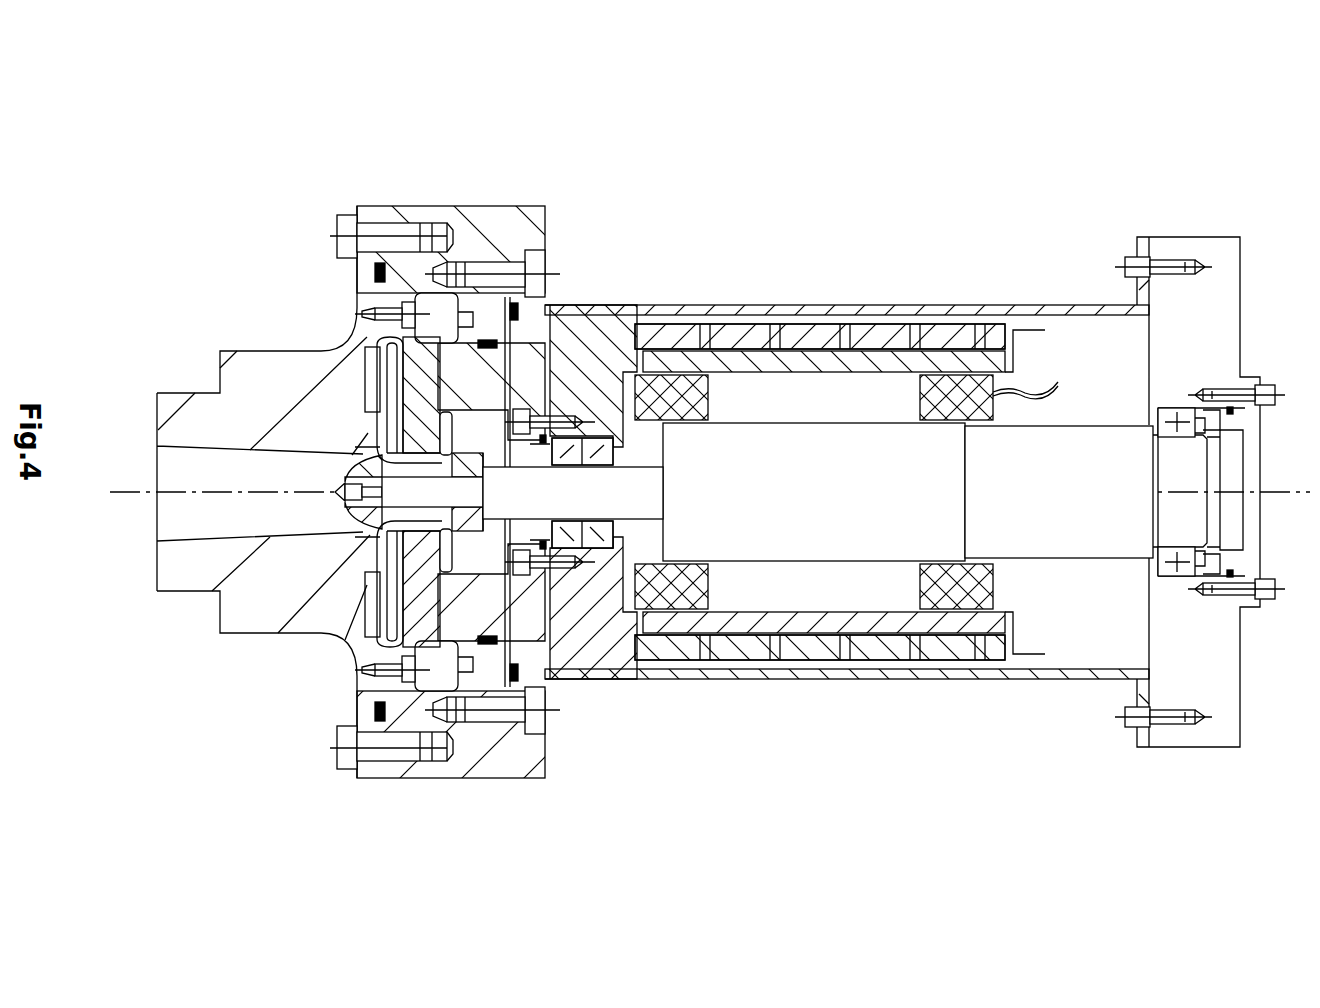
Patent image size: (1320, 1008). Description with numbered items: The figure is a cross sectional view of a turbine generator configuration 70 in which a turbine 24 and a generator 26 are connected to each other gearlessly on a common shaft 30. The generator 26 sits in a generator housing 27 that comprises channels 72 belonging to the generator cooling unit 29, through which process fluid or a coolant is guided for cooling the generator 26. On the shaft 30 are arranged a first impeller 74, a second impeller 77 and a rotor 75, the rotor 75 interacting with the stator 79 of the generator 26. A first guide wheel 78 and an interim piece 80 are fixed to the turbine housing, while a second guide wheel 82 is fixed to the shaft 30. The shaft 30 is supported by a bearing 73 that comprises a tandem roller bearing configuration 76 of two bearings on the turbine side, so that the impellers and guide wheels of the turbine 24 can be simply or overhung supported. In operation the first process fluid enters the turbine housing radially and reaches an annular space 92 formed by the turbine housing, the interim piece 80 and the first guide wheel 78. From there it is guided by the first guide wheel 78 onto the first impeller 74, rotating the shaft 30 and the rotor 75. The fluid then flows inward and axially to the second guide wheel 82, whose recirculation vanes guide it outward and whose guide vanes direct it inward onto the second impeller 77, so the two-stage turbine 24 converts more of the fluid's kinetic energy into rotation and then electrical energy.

The turbine generator configuration 70 is at (342, 134).
The turbine 24 is at (444, 127).
The generator 26 is at (1037, 245).
The annular space 92 is at (400, 302).
The bearing 73 is at (1180, 430).
The tandem roller bearing configuration 76 is at (600, 440).
The rotor 75 is at (785, 455).
The generator cooling unit 29 is at (948, 318).
The channels 72 is at (820, 492).
The generator housing 27 is at (612, 672).
The stator 79 is at (676, 598).
The shaft 30 is at (1070, 535).
The second impeller 77 is at (385, 555).
The second guide wheel 82 is at (382, 612).
The interim piece 80 is at (418, 622).
The first impeller 74 is at (473, 528).
The first guide wheel 78 is at (527, 640).